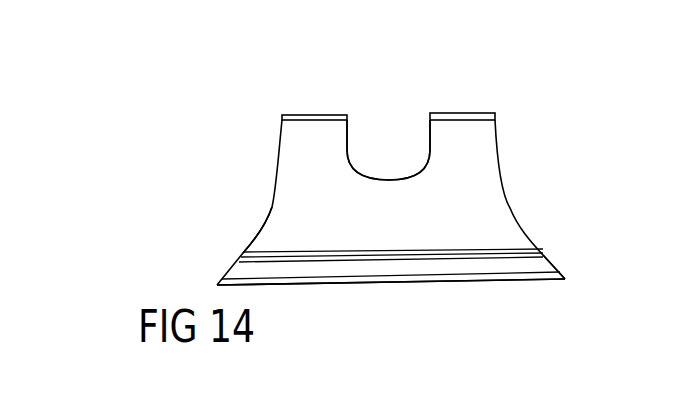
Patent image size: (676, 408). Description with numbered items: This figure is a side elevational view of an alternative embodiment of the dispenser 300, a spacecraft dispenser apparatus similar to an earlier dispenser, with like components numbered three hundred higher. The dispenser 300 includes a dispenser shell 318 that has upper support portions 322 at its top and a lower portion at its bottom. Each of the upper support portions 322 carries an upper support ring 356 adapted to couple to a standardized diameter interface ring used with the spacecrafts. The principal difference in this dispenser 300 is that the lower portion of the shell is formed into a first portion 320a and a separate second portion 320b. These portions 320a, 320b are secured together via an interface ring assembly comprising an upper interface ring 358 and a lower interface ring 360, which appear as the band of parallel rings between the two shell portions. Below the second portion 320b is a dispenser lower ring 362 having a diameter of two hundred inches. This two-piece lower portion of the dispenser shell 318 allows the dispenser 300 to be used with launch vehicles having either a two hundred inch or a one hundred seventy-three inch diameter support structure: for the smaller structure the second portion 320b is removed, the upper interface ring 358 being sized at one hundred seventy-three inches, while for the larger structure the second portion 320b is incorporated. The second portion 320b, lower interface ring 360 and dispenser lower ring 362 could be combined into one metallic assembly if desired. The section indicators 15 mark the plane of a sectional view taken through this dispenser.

The dispenser 300 is at (205, 103).
The dispenser shell 318 is at (266, 168).
The first portion 320a is at (272, 237).
The second portion 320b is at (235, 268).
The upper support portions 322 is at (294, 140).
The upper support rings 356 is at (460, 110).
The upper interface ring 358 is at (543, 251).
The lower interface ring 360 is at (545, 257).
The dispenser lower ring 362 is at (430, 280).
The section line 15- 15 is at (593, 78).